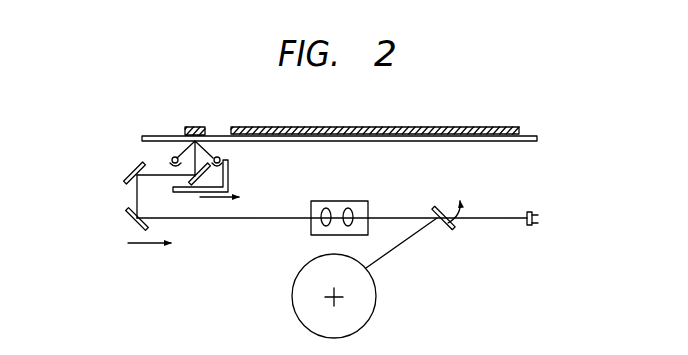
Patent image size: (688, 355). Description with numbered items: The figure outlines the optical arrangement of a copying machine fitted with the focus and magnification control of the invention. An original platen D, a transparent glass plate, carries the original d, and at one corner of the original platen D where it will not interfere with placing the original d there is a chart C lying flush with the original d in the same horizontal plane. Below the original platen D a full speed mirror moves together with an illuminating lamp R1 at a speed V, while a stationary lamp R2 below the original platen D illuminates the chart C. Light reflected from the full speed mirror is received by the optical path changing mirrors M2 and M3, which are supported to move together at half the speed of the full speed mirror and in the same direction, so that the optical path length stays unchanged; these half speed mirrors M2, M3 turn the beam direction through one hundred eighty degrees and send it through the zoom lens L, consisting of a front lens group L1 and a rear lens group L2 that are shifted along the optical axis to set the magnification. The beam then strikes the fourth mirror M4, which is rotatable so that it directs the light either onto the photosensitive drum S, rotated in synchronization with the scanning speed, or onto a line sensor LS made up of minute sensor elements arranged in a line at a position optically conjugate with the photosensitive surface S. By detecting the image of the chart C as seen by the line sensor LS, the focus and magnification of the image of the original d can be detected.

The original platen D is at (538, 141).
The original d is at (509, 128).
The chart C is at (195, 127).
The illuminating lamp R1 is at (220, 157).
The stationary lamp R2 is at (173, 158).
The optical path changing mirror M2 is at (127, 176).
The optical path changing mirror M3 is at (128, 221).
The fourth mirror M4 is at (443, 211).
The zoom lens L is at (303, 231).
The front lens group L1 is at (322, 208).
The rear lens group L2 is at (350, 208).
The line sensor LS is at (533, 212).
The photosensitive drum S is at (377, 294).
The speed of the full speed mirror V is at (229, 197).